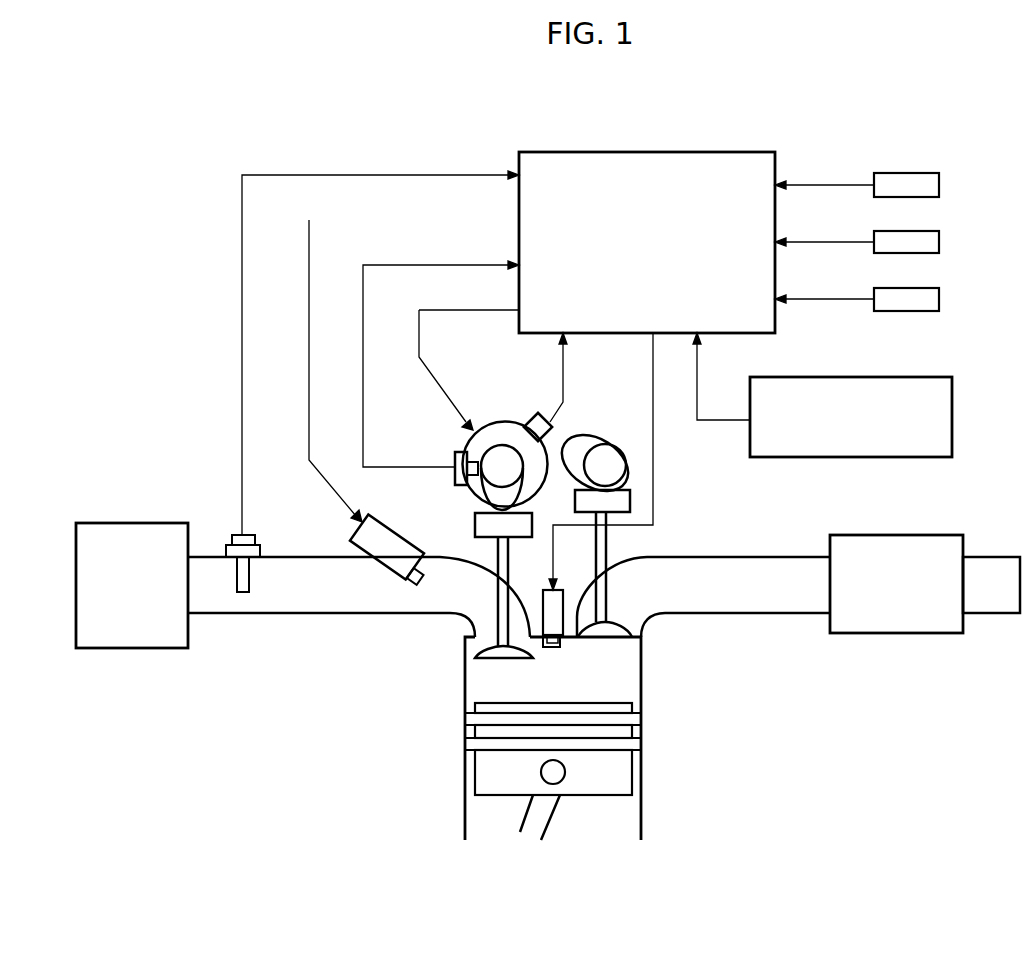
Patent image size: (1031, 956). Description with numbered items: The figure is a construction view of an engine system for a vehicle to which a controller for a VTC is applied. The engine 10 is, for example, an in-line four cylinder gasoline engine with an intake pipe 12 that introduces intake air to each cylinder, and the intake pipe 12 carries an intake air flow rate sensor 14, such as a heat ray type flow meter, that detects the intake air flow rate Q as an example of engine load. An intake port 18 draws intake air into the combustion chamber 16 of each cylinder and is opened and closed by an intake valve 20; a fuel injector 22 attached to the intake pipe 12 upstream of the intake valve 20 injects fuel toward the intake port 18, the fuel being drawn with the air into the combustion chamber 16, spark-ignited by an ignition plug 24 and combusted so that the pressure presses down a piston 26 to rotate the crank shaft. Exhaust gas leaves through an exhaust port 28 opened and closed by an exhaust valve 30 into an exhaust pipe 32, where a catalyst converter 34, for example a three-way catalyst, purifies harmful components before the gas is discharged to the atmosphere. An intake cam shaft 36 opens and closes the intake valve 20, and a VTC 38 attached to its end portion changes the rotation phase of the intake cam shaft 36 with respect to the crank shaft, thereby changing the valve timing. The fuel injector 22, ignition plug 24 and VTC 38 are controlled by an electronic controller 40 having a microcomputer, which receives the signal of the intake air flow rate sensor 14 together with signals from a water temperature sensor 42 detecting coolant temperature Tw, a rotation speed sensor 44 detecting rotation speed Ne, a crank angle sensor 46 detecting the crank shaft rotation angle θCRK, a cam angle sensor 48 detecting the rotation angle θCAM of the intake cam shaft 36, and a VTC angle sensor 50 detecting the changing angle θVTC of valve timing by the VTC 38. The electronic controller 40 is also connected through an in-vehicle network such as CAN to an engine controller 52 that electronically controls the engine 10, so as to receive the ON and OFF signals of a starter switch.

The engine 10 is at (463, 785).
The intake pipe 12 is at (284, 614).
The intake air flow rate sensor 14 is at (235, 534).
The combustion chamber 16 is at (488, 712).
The intake port 18 is at (461, 620).
The intake valve 20 is at (486, 670).
The fuel injector 22 is at (350, 526).
The ignition plug 24 is at (555, 647).
The piston 26 is at (618, 763).
The exhaust port 28 is at (628, 610).
The exhaust valve 30 is at (600, 630).
The exhaust pipe 32 is at (727, 555).
The catalyst converter 34 is at (898, 535).
The intake cam shaft 36 is at (500, 468).
The VTC 38 is at (487, 412).
The electronic controller 40 is at (659, 151).
The water temperature sensor 42 is at (942, 173).
The rotation speed sensor 44 is at (942, 231).
The crank angle sensor 46 is at (942, 288).
The cam angle sensor 48 is at (455, 450).
The VTC angle sensor 50 is at (537, 412).
The engine controller 52 is at (953, 412).